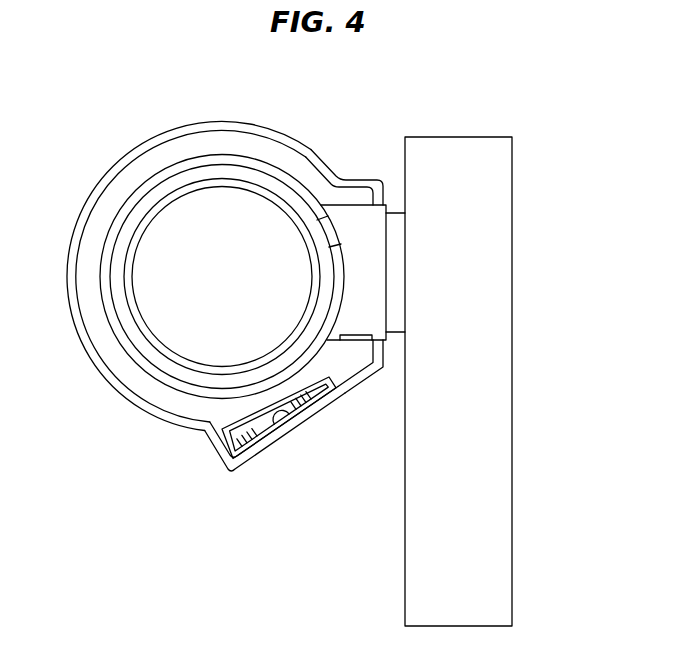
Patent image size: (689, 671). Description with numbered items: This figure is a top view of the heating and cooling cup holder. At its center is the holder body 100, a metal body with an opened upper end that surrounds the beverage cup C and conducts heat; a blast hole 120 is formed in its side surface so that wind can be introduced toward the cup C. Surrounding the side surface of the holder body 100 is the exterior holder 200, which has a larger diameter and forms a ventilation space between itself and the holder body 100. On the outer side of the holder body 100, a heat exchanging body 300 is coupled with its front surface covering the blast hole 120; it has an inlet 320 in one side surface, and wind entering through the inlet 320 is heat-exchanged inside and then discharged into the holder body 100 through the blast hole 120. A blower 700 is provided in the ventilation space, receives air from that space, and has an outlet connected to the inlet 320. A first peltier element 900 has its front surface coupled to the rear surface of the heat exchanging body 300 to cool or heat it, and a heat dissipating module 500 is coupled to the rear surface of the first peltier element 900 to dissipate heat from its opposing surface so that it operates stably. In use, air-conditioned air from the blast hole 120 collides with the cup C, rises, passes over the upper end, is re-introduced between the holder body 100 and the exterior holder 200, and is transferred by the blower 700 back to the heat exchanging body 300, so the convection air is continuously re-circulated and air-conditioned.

The holder body 100 is at (153, 370).
The blast hole 120 is at (325, 233).
The exterior holder 200 is at (92, 360).
The heat exchanging body 300 is at (356, 218).
The inlet 320 is at (352, 342).
The heat dissipating module 500 is at (490, 392).
The blower 700 is at (260, 430).
The first peltier element 900 is at (395, 260).
The cup C is at (184, 192).